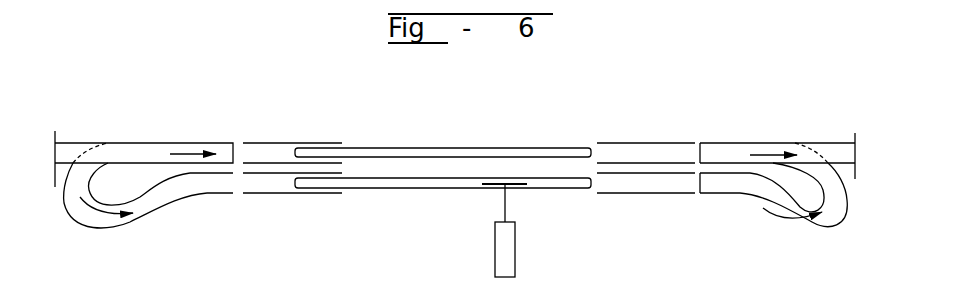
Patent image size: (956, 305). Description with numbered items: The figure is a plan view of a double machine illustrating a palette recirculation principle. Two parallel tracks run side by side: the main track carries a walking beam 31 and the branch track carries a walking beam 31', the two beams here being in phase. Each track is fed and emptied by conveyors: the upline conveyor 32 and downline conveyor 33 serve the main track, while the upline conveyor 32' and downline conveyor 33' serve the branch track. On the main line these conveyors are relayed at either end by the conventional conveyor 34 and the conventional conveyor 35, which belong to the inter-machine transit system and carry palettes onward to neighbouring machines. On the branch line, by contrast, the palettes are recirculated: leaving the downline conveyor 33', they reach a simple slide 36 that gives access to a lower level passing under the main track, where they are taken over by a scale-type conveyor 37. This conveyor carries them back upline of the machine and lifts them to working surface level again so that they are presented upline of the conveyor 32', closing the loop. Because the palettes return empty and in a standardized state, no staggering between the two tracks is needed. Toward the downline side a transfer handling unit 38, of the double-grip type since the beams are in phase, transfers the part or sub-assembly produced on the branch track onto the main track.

The walking beam 31 is at (443, 123).
The walking beam 31' is at (443, 219).
The upline conveyor 32 is at (292, 126).
The upline conveyor 32' is at (291, 217).
The downline conveyor 33 is at (646, 126).
The downline conveyor 33' is at (646, 217).
The conventional conveyor 34 is at (138, 155).
The conventional conveyor 35 is at (723, 152).
The slide 36 is at (750, 195).
The scale-type conveyor 37 is at (155, 203).
The transfer handling unit 38 is at (503, 248).